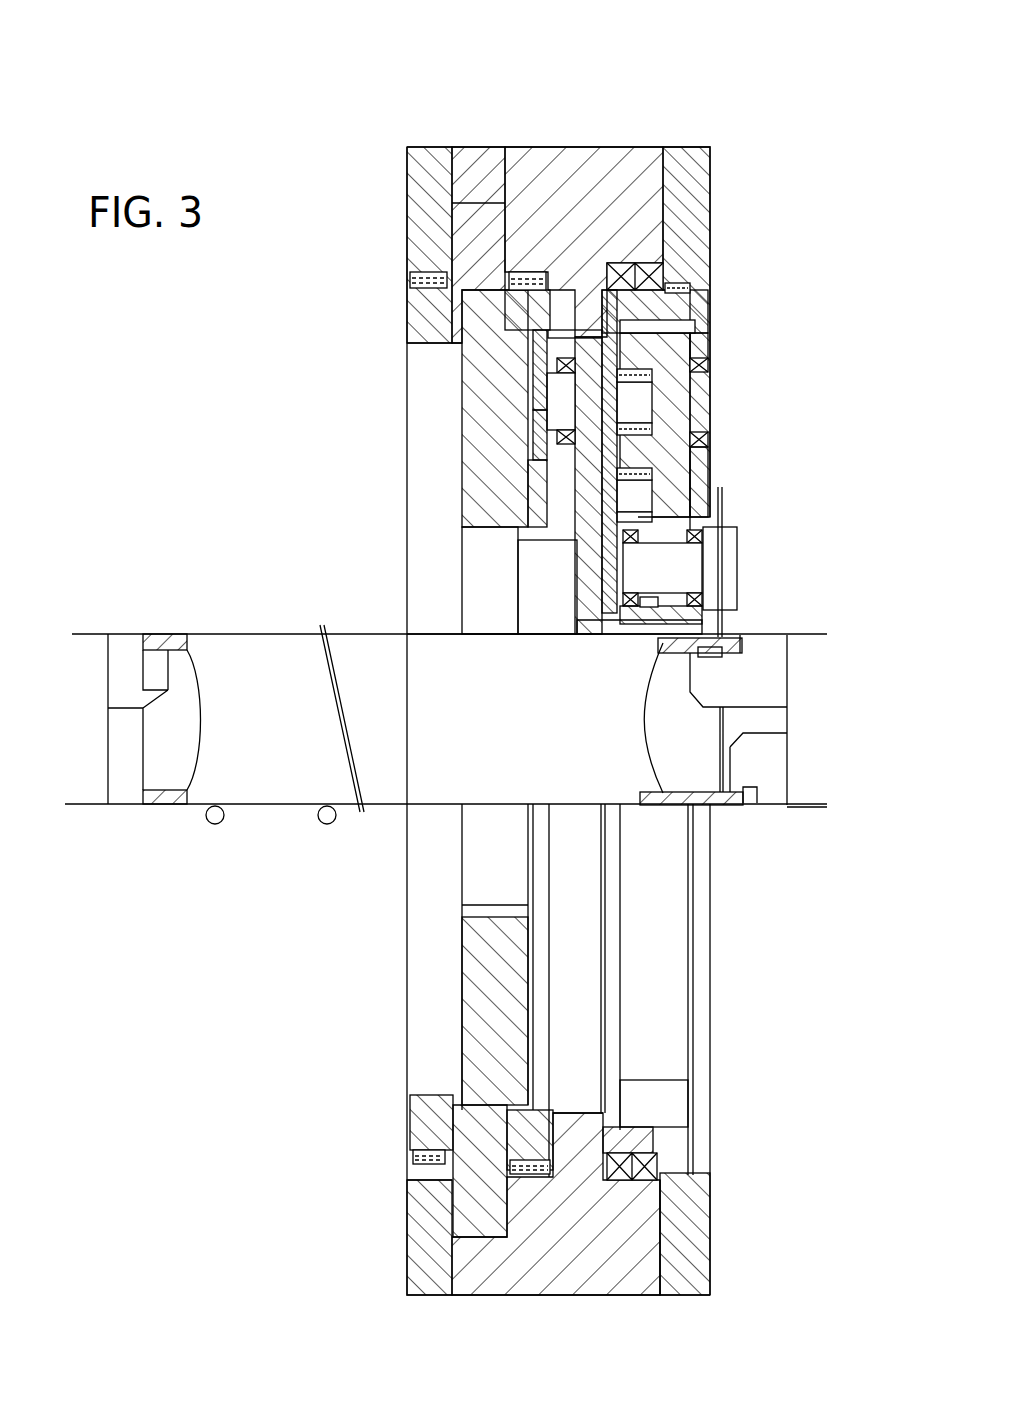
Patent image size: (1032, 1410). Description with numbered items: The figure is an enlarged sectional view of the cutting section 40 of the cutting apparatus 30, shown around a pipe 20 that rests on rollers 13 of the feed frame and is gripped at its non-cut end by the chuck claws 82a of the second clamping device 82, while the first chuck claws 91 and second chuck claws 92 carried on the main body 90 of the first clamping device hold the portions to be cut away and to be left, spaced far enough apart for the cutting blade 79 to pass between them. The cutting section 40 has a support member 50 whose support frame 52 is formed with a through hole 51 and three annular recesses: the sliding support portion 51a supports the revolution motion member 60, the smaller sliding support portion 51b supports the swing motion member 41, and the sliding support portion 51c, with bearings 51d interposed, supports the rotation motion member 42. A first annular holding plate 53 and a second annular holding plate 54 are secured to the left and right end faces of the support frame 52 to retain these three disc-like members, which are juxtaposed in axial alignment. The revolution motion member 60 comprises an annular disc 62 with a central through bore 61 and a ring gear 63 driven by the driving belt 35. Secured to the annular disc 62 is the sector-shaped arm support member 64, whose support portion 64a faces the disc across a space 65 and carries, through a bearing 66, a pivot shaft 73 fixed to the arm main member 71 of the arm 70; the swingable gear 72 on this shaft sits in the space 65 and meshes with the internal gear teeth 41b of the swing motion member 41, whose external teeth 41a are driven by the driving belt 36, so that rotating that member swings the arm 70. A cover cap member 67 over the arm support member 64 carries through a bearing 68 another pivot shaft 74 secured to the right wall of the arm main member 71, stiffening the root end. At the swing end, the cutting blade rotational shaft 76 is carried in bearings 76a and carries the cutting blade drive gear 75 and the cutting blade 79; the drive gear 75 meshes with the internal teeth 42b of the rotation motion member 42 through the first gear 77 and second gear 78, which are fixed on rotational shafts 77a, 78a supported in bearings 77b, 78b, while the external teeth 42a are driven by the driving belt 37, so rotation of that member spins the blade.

The cutting apparatus 30 is at (396, 118).
The driving belt 35 is at (428, 268).
The driving belt 36 is at (528, 270).
The driving belt 37 is at (680, 280).
The swing motion member 41 is at (530, 850).
The external teeth 41a is at (490, 240).
The internal gear teeth 41b is at (465, 338).
The rotation motion member 42 is at (670, 853).
The external teeth 42a is at (690, 282).
The internal teeth 42b is at (692, 320).
The arm support member 64 is at (538, 486).
The support portion 64a is at (575, 335).
The space 65 is at (540, 412).
The bearing 66 is at (540, 433).
The cover cap member 67 is at (708, 345).
The bearing 68 is at (708, 367).
The arm 70 is at (600, 641).
The arm main member 71 is at (700, 462).
The swingable gear 72 is at (555, 367).
The pivot shaft 73 is at (555, 395).
The pivot shaft 74 is at (705, 396).
The cutting blade drive gear 75 is at (607, 565).
The cutting blade rotational shaft 76 is at (662, 573).
The bearings 76a is at (635, 600).
The first gear 77 is at (556, 540).
The rotational shaft 77a is at (655, 497).
The bearings 77b is at (655, 472).
The second gear 78 is at (513, 527).
The rotational shaft 78a is at (655, 402).
The bearings 78b is at (655, 428).
The cutting blade 79 is at (724, 503).
The cutting section 40 is at (395, 590).
The pipe 20 is at (370, 632).
The second clamping device 82 is at (82, 634).
The chuck claws 82a is at (140, 634).
The rollers 13 is at (318, 818).
The main body 90 is at (810, 808).
The first chuck claws 91 is at (775, 763).
The second chuck claws 92 is at (775, 672).
The revolution motion member 60 is at (392, 885).
The through bore 61 is at (462, 905).
The annular disc 62 is at (470, 950).
The ring gear 63 is at (410, 1120).
The support member 50 is at (555, 1308).
The through hole 51 is at (640, 1085).
The sliding support portion 51a is at (495, 1240).
The sliding support portion 51b is at (533, 1180).
The sliding support portion 51c is at (648, 1230).
The bearings 51d is at (660, 1166).
The support frame 52 is at (578, 1296).
The first annular holding plate 53 is at (407, 1250).
The second annular holding plate 54 is at (710, 1240).